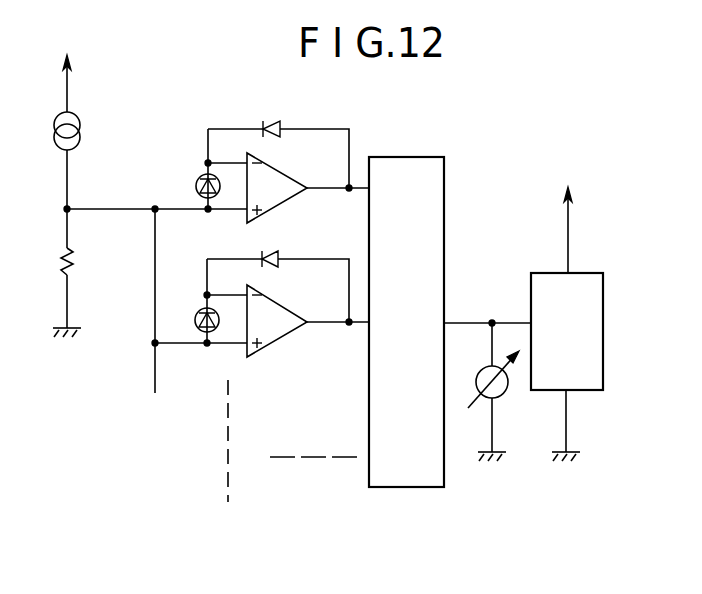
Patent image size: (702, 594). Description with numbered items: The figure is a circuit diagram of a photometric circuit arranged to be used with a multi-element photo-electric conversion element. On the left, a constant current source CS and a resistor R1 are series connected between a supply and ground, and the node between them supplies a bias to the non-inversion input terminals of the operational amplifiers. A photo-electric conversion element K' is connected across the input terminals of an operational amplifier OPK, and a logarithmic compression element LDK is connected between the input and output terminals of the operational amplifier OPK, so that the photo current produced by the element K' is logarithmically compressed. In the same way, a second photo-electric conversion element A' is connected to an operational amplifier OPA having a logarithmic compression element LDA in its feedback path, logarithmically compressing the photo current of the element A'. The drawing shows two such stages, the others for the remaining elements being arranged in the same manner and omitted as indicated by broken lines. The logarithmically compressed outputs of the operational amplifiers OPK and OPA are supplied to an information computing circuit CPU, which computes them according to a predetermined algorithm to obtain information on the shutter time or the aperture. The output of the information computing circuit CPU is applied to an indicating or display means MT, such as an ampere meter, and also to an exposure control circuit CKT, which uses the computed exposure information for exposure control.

The constant current source CS is at (82, 130).
The resistor R1 is at (77, 263).
The photo-electric conversion element K' is at (187, 169).
The photo-electric conversion element A' is at (192, 301).
The logarithmic compression element LDK is at (265, 121).
The logarithmic compression element LDA is at (277, 257).
The operational amplifier OPK is at (278, 170).
The operational amplifier OPA is at (278, 304).
The information computing circuit CPU is at (416, 157).
The indicating or display means MT is at (478, 384).
The exposure control circuit CKT is at (588, 272).